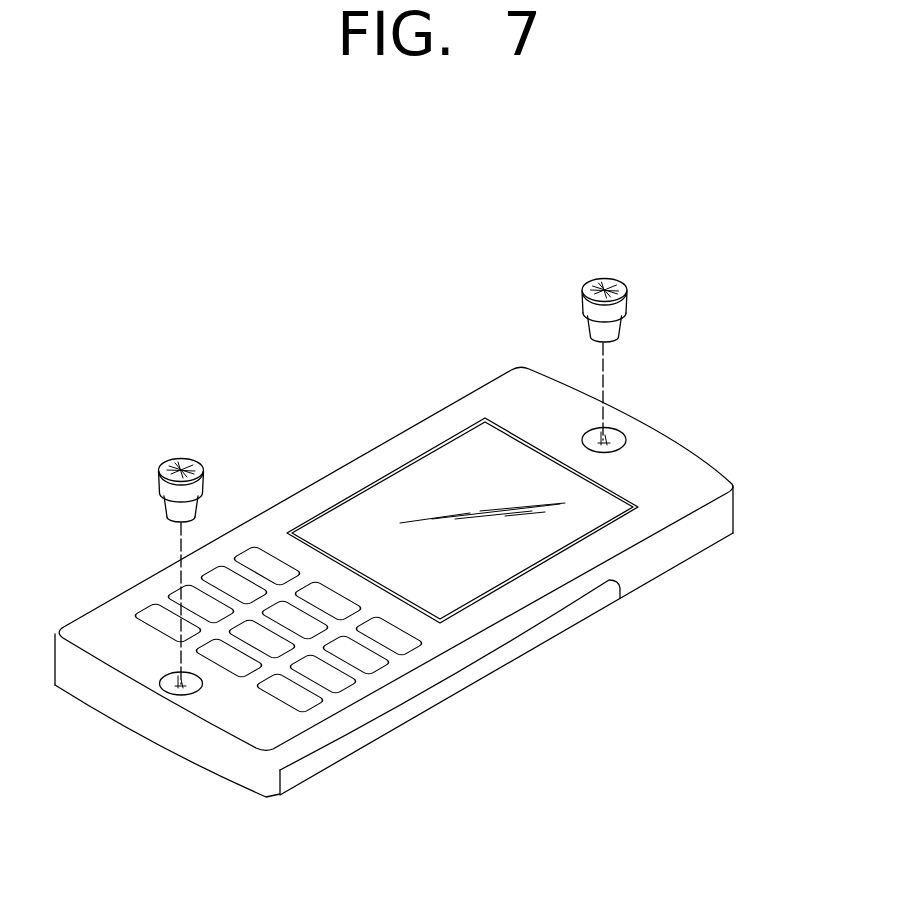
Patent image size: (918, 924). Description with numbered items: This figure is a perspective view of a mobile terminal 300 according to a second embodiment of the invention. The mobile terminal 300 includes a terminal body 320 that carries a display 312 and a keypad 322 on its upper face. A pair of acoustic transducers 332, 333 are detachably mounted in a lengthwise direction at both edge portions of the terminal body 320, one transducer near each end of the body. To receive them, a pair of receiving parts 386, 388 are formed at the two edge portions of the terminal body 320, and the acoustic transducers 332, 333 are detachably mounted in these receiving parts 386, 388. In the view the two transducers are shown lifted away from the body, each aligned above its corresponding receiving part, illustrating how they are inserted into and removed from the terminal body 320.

The mobile terminal 300 is at (820, 345).
The display 312 is at (420, 487).
The terminal body 320 is at (642, 560).
The keypad 322 is at (338, 682).
The acoustic transducer 332 is at (585, 280).
The acoustic transducer 333 is at (165, 458).
The receiving part 386 is at (612, 440).
The receiving part 388 is at (160, 688).